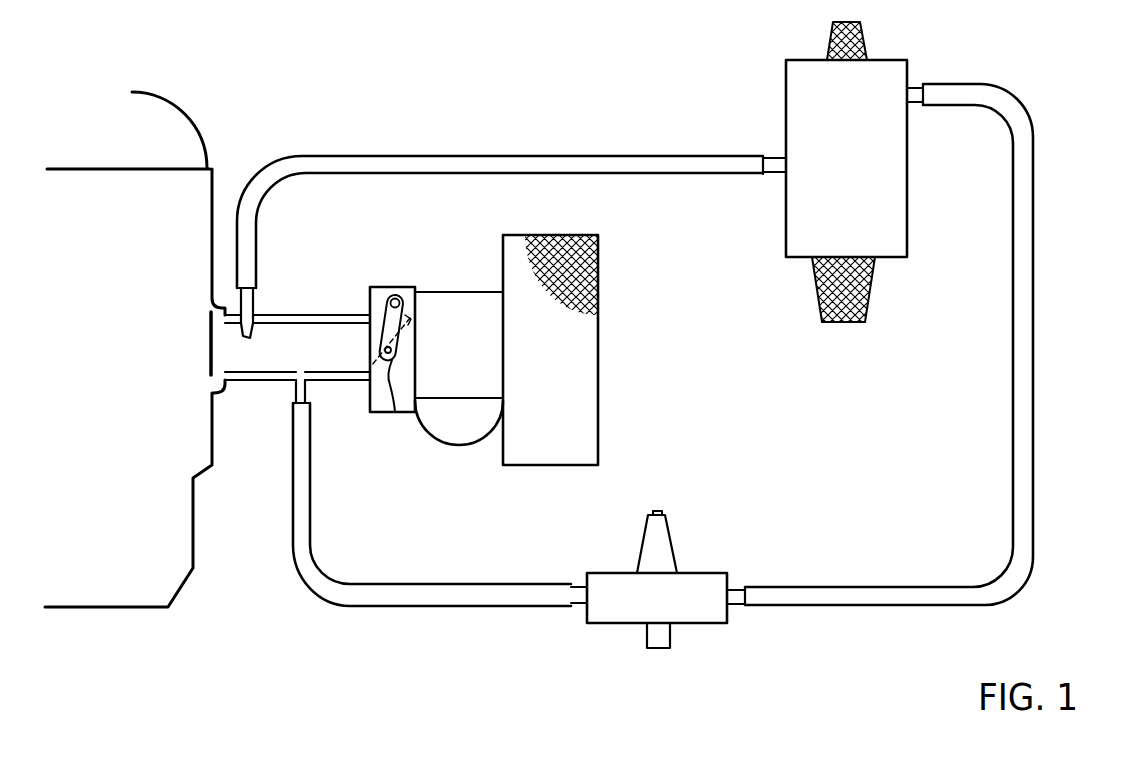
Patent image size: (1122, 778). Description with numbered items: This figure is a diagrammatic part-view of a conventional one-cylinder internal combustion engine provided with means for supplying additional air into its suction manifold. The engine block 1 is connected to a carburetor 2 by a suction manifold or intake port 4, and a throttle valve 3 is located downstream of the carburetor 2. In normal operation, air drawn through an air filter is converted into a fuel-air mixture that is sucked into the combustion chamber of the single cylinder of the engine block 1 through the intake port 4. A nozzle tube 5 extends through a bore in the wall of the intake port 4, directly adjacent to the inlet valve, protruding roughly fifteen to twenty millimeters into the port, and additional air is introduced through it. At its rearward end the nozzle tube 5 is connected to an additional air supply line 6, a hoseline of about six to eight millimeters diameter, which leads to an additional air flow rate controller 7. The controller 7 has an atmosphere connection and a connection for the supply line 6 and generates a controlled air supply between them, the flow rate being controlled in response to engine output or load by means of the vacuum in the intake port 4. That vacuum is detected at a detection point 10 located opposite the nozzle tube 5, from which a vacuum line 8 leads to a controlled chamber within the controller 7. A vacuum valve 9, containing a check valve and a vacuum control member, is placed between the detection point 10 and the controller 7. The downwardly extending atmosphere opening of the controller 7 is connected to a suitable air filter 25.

The engine block 1 is at (170, 114).
The carburetor 2 is at (470, 378).
The throttle valve 3 is at (400, 412).
The intake port 4 is at (275, 360).
The nozzle tube 5 is at (256, 325).
The additional air supply line 6 is at (350, 157).
The additional air flow rate controller 7 is at (795, 112).
The vacuum line 8 is at (1030, 560).
The vacuum valve 9 is at (692, 587).
The detection point 10 is at (312, 393).
The air filter 25 is at (833, 283).